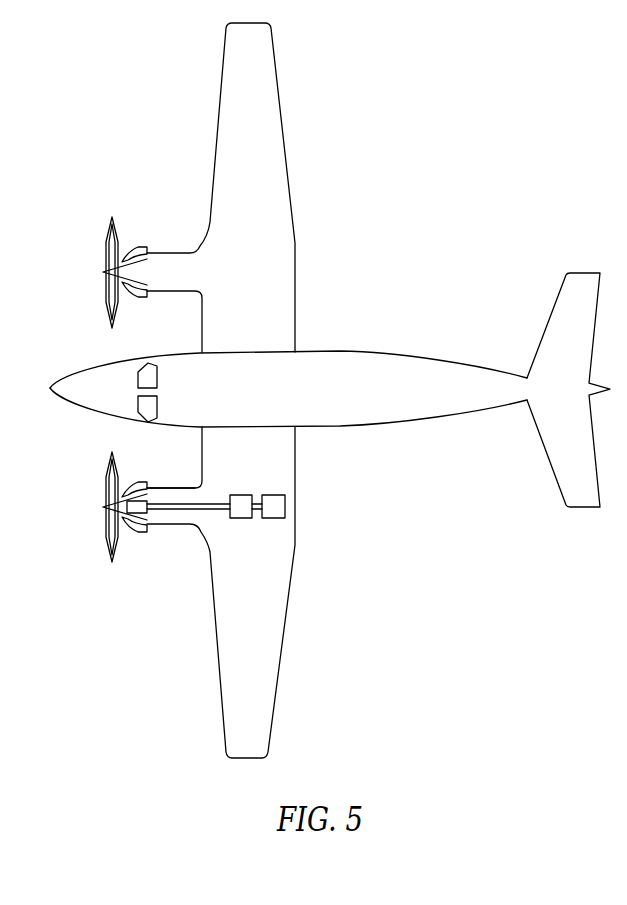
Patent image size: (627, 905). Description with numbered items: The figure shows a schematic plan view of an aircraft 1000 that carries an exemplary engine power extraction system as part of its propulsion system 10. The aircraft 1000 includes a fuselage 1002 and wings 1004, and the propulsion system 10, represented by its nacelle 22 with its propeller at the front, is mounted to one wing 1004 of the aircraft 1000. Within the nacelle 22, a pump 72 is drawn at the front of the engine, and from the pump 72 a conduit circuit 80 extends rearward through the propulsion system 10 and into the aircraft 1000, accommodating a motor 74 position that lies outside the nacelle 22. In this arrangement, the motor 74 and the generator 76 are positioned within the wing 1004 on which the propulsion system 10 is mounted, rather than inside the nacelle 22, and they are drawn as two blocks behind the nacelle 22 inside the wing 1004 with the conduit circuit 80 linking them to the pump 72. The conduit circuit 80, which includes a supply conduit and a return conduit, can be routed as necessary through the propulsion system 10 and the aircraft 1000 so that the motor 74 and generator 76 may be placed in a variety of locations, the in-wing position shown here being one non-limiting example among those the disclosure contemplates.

The aircraft 1000 is at (480, 132).
The fuselage 1002 is at (403, 364).
The wing 1004 is at (272, 98).
The propulsion system 10 is at (237, 518).
The nacelle 22 is at (170, 487).
The pump 72 is at (142, 530).
The motor 74 is at (244, 519).
The generator 76 is at (285, 507).
The conduit circuit 80 is at (215, 503).